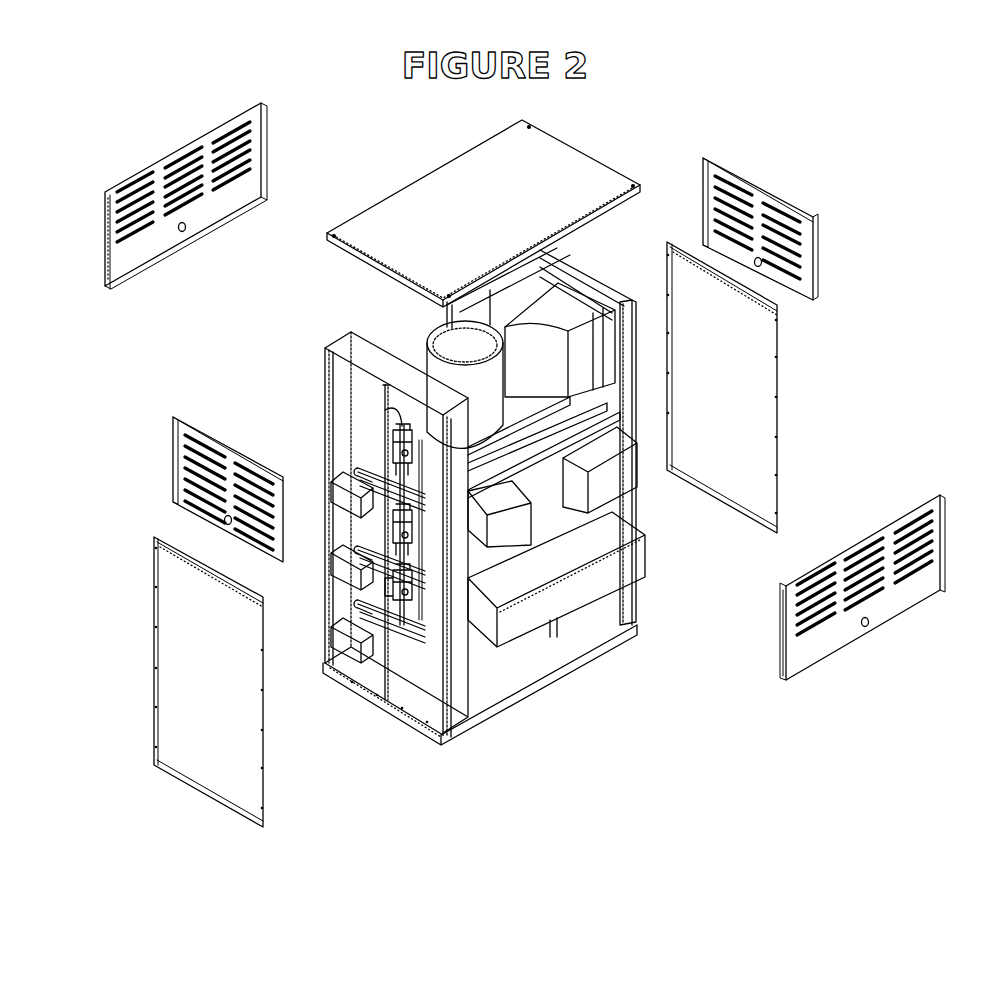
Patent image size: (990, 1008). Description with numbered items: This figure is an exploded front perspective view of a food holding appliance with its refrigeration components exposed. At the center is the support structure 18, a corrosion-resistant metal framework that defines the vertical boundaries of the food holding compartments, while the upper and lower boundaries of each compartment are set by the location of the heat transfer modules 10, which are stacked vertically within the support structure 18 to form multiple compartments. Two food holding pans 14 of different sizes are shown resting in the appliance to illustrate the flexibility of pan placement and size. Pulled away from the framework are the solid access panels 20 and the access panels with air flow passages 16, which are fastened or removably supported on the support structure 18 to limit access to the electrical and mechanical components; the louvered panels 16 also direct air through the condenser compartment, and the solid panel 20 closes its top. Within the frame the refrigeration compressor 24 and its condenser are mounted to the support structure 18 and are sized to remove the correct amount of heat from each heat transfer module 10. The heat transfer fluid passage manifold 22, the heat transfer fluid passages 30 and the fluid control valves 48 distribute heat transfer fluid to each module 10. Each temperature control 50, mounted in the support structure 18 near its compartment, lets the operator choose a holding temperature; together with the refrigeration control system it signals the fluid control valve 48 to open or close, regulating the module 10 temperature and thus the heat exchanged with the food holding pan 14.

The heat transfer module 10 is at (543, 527).
The food holding pan 14 is at (606, 481).
The access panel with air flow passages 16 is at (108, 284).
The support structure 18 is at (634, 382).
The solid access panel 20 is at (505, 193).
The heat transfer fluid passage manifold 22 is at (380, 610).
The refrigeration compressor 24 is at (490, 392).
The heat transfer fluid passage 30 is at (385, 422).
The fluid control valve 48 is at (403, 600).
The temperature control 50 is at (348, 580).